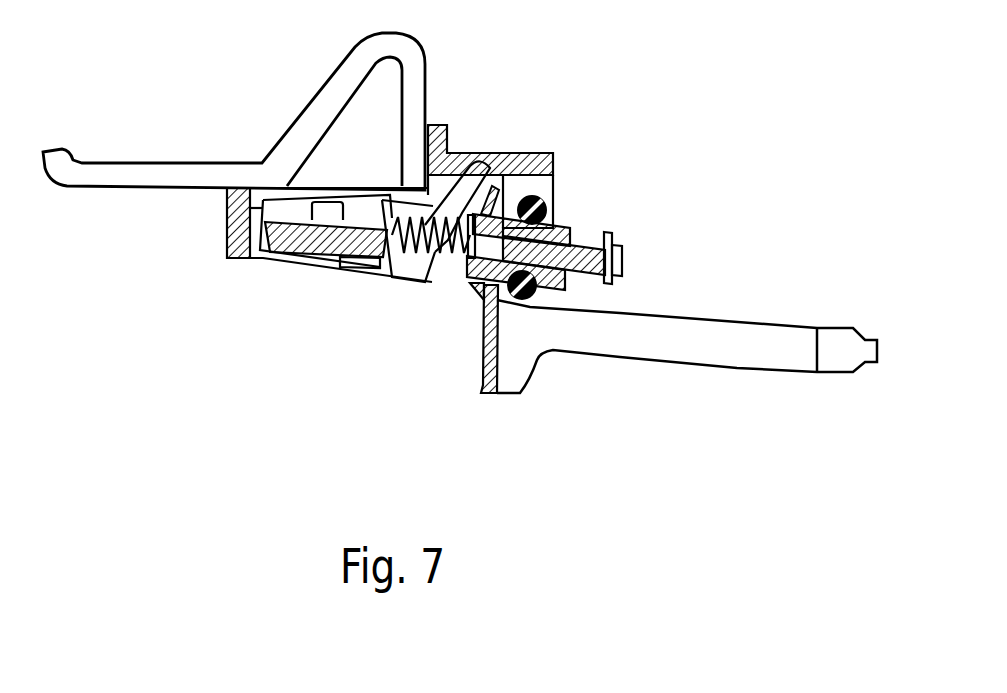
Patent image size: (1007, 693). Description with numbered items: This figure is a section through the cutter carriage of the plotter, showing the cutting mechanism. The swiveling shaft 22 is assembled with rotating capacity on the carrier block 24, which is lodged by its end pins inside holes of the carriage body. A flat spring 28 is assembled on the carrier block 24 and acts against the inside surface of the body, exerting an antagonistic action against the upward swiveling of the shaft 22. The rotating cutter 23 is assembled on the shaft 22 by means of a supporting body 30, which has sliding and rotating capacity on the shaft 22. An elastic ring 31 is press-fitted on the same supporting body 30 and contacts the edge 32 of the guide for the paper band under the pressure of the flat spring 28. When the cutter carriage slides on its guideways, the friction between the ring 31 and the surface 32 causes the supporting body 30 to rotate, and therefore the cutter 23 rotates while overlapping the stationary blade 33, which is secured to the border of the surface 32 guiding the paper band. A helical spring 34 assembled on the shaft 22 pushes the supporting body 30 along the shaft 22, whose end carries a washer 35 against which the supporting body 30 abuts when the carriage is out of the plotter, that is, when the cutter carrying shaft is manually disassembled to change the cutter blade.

The swiveling shaft 22 is at (590, 240).
The rotating cutter 23 is at (472, 291).
The carrier block 24 is at (343, 247).
The flat spring 28 is at (430, 212).
The supporting body 30 is at (500, 205).
The elastic ring 31 is at (545, 193).
The edge of the guide for the paper band 32 is at (578, 302).
The stationary blade 33 is at (483, 357).
The helical spring 34 is at (397, 258).
The washer 35 is at (614, 280).